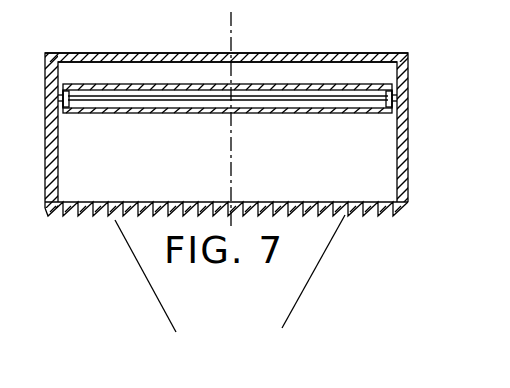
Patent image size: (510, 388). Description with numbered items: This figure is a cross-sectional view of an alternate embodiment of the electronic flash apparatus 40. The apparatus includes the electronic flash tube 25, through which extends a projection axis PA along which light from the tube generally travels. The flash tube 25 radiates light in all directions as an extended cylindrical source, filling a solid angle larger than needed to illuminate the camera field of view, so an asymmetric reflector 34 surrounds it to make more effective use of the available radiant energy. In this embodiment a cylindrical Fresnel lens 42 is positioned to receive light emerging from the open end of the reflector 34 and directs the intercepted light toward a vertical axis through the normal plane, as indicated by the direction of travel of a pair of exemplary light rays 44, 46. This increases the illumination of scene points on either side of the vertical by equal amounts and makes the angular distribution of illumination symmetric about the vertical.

The electronic flash apparatus 40 is at (362, 49).
The asymmetric reflector 34 is at (165, 53).
The cylindrical Fresnel lens 42 is at (372, 211).
The electronic flash tube 25 is at (171, 116).
The projection axis PA is at (233, 167).
The exemplary light ray 44 is at (133, 257).
The exemplary light ray 46 is at (335, 270).